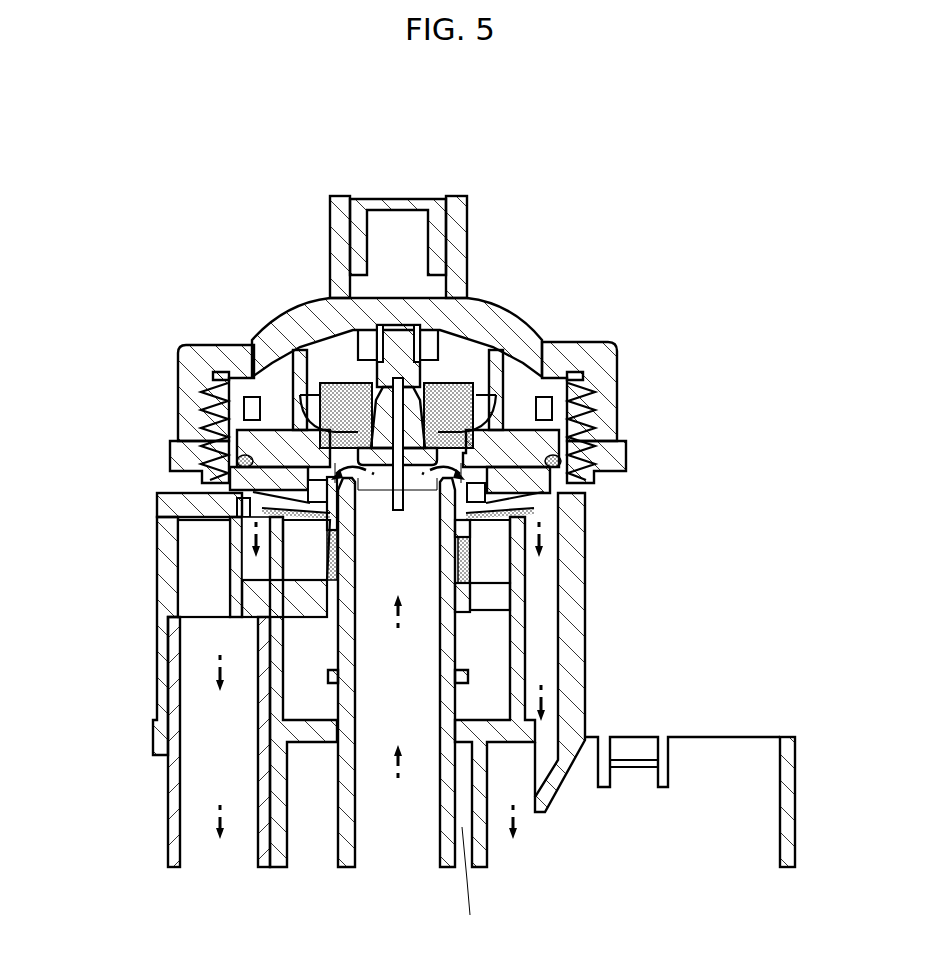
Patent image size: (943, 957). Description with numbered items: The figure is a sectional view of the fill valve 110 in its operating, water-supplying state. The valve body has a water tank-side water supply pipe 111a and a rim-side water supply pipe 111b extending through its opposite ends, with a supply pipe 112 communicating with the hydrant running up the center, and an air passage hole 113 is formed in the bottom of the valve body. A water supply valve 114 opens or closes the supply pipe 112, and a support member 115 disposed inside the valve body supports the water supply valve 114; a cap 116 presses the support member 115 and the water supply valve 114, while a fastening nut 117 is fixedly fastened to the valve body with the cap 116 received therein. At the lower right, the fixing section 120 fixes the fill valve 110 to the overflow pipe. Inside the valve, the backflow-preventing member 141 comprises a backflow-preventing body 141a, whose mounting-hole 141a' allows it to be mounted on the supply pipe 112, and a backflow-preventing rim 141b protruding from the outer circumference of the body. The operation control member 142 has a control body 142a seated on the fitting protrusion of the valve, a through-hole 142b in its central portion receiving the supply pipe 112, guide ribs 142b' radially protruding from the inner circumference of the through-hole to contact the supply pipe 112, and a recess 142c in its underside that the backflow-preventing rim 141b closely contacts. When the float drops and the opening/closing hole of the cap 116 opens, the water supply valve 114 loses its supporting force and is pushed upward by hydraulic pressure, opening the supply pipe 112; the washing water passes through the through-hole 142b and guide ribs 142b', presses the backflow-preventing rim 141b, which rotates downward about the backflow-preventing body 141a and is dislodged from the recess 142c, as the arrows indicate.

The fill valve 110 is at (150, 657).
The water tank-side water supply pipe 111a is at (177, 797).
The rim-side water supply pipe 111b is at (570, 663).
The supply pipe 112 is at (398, 702).
The air passage hole 113 is at (302, 596).
The water supply valve 114 is at (448, 400).
The support member 115 is at (175, 432).
The cap 116 is at (302, 327).
The fastening nut 117 is at (203, 355).
The fixing section 120 is at (796, 783).
The backflow-preventing member 141 is at (316, 567).
The backflow-preventing body 141a is at (456, 592).
The mounting-hole 141a' is at (511, 559).
The backflow-preventing rim 141b is at (500, 522).
The operation control member 142 is at (236, 482).
The control body 142a is at (540, 483).
The through-hole 142b is at (475, 435).
The guide ribs 142b' is at (476, 506).
The recess 142c is at (243, 505).